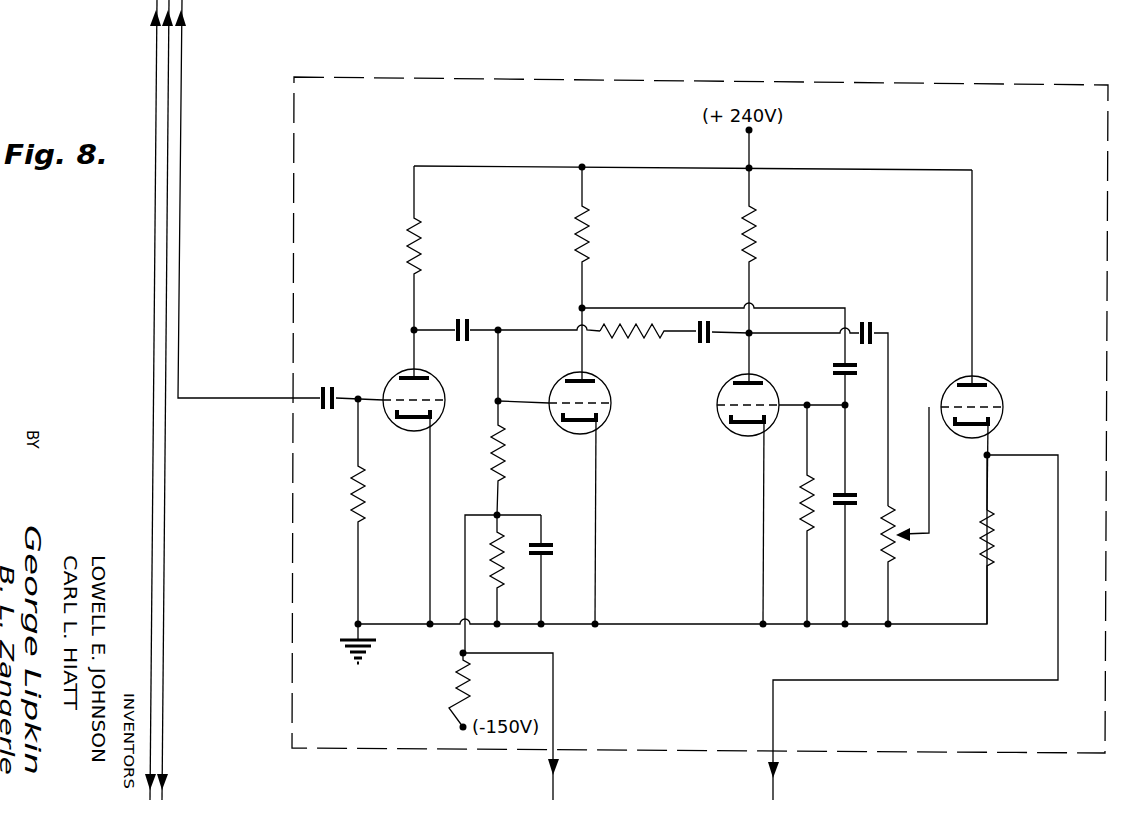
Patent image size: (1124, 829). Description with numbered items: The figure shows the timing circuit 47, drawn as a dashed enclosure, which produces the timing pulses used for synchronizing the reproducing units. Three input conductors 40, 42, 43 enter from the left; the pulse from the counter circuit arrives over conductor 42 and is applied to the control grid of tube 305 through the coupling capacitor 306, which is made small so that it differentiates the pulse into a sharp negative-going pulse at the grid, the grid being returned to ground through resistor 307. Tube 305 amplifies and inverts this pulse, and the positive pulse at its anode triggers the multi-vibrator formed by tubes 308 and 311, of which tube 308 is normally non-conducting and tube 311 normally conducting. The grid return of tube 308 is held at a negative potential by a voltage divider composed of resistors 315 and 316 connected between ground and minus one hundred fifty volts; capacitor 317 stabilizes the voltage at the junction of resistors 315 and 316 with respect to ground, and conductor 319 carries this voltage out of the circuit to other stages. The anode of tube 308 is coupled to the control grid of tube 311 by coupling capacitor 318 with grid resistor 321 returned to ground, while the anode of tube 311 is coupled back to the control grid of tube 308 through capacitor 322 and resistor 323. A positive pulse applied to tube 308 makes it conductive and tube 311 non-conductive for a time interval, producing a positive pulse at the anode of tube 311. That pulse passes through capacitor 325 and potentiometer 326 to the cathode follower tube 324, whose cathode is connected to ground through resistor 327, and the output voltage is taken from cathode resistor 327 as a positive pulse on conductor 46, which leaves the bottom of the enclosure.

The input line 40 is at (170, 37).
The conductor 42 is at (182, 70).
The input line 43 is at (155, 38).
The conductor 46 is at (818, 681).
The timing circuit 47 is at (864, 82).
The tube 305 is at (388, 374).
The coupling capacitor 306 is at (343, 372).
The grid resistor 307 is at (366, 490).
The tube 308 is at (595, 426).
The tube 311 is at (726, 434).
The resistor 315 is at (490, 686).
The resistor 316 is at (520, 584).
The capacitor 317 is at (575, 530).
The coupling capacitor 318 is at (832, 374).
The conductor 319 is at (556, 711).
The grid resistor 321 is at (798, 500).
The capacitor 322 is at (712, 340).
The resistor 323 is at (630, 338).
The cathode follower tube 324 is at (986, 376).
The capacitor 325 is at (868, 332).
The potentiometer 326 is at (894, 553).
The resistor 327 is at (991, 553).